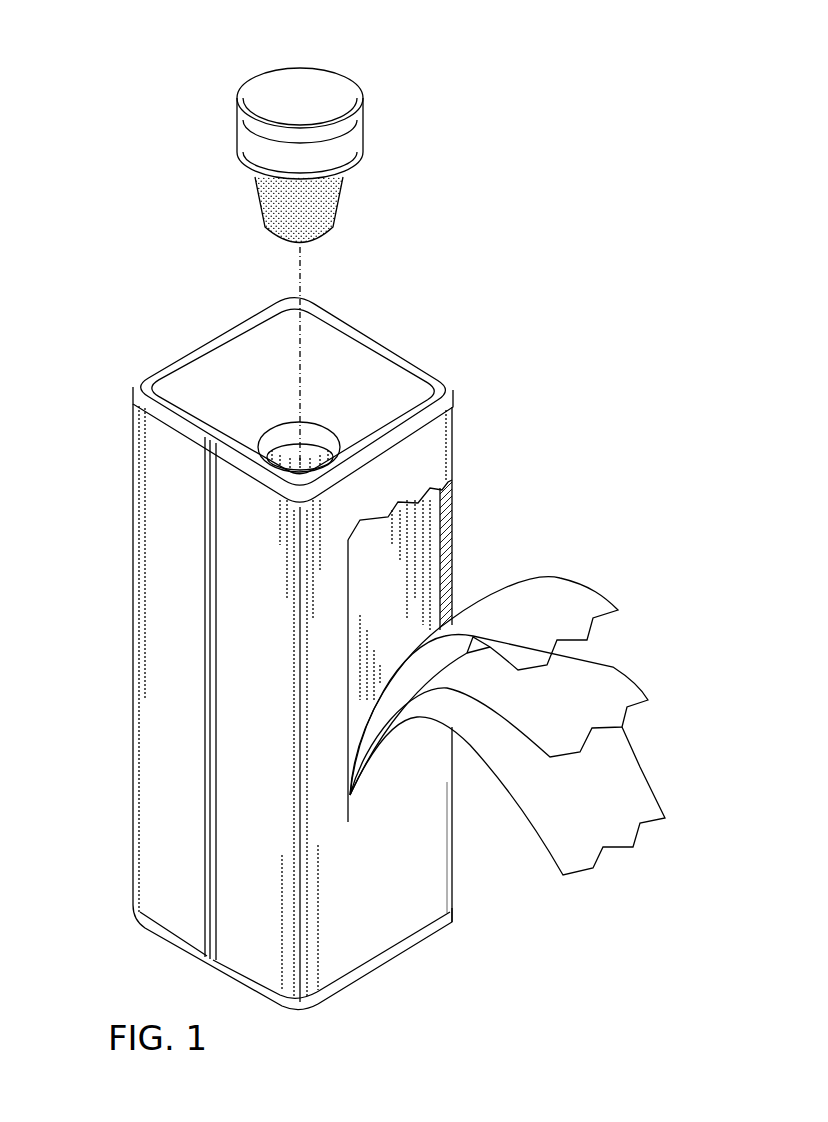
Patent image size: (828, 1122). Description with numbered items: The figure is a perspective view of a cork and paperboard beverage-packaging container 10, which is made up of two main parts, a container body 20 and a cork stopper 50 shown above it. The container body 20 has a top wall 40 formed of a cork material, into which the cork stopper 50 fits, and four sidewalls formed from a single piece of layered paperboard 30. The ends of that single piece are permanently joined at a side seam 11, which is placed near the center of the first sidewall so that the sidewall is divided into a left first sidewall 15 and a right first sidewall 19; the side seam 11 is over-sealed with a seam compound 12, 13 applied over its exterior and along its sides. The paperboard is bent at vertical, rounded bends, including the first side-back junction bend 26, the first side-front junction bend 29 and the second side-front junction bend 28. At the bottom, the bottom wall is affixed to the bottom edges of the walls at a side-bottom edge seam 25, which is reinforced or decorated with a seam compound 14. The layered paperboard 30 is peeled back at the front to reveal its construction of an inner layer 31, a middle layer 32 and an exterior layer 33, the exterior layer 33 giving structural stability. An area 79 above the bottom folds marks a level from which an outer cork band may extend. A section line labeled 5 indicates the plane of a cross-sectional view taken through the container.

The beverage-packaging container 10 is at (158, 87).
The container body 20 is at (98, 593).
The cork stopper 50 is at (397, 163).
The top wall 40 is at (395, 342).
The section line 5- 5 is at (182, 383).
The left first sidewall 15 is at (165, 723).
The right first sidewall 19 is at (232, 647).
The side seam 11 is at (213, 755).
The seam compound 12 is at (207, 808).
The seam compound 13 is at (208, 813).
The first side-back junction bend 26 is at (135, 830).
The first side-front junction bend 29 is at (300, 920).
The area 79 is at (407, 875).
The second side-front junction bend 28 is at (452, 860).
The side-bottom edge seam 25 is at (397, 963).
The seam compound 14 is at (340, 987).
The layered paperboard 30 is at (670, 617).
The inner layer 31 is at (566, 582).
The middle layer 32 is at (612, 667).
The exterior layer 33 is at (637, 772).